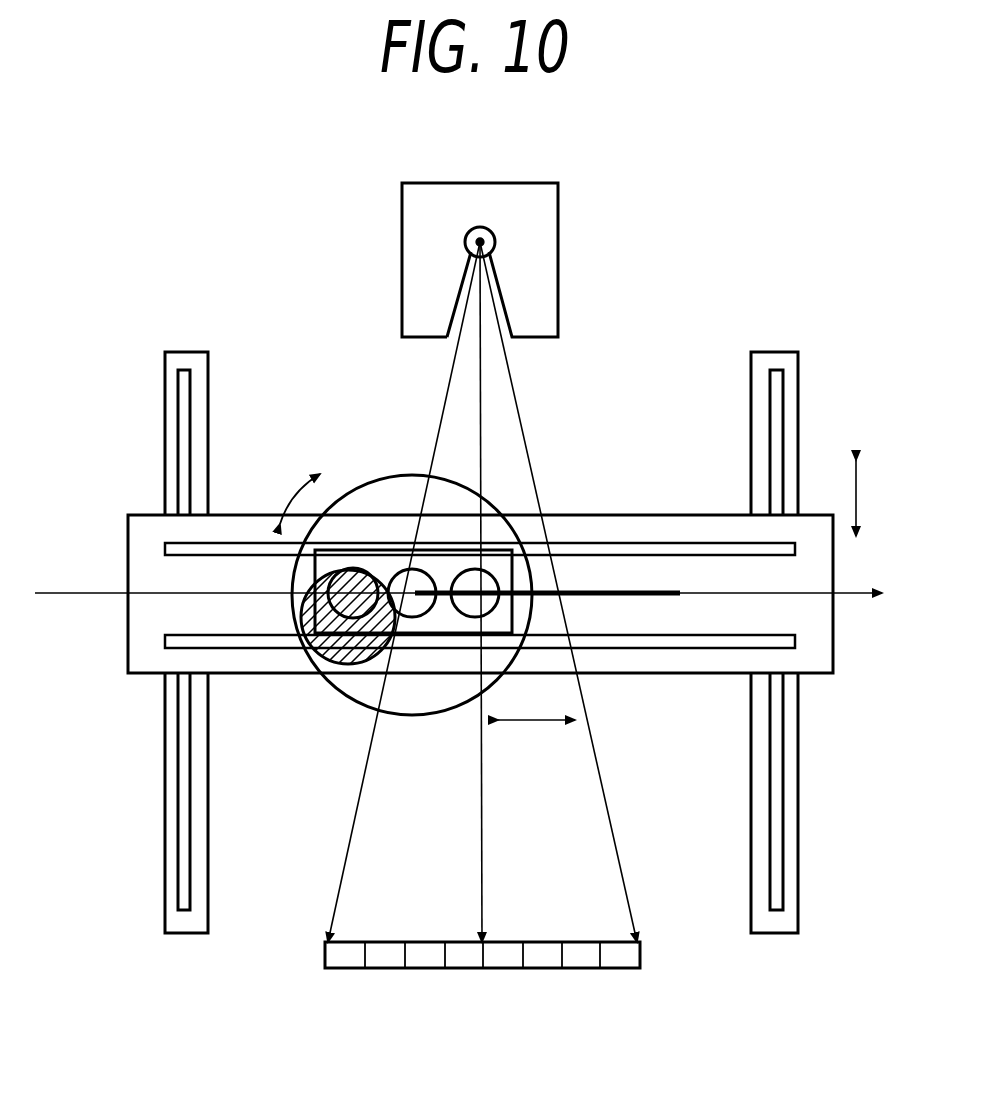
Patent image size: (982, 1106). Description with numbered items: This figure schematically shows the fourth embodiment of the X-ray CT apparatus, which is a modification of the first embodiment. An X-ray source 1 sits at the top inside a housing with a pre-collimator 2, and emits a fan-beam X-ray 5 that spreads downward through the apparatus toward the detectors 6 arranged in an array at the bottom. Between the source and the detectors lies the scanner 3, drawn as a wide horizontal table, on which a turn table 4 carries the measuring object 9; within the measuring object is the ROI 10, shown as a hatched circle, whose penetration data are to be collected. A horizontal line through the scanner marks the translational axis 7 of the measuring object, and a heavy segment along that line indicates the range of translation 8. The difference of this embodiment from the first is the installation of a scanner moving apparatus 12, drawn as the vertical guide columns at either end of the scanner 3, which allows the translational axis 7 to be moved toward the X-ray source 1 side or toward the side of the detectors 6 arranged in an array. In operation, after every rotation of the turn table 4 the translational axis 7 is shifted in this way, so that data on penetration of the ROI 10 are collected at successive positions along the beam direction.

The X-ray source 1 is at (490, 238).
The pre-collimator 2 is at (535, 300).
The scanner 3 is at (631, 526).
The turn table 4 is at (360, 508).
The fan-beam X-ray 5 is at (585, 838).
The detectors arranged in an array 6 is at (645, 953).
The translational axis 7 is at (845, 595).
The range of translation 8 is at (658, 598).
The measuring object 9 is at (388, 565).
The ROI in the measuring object 10 is at (350, 660).
The scanner moving apparatus 12 is at (175, 400).